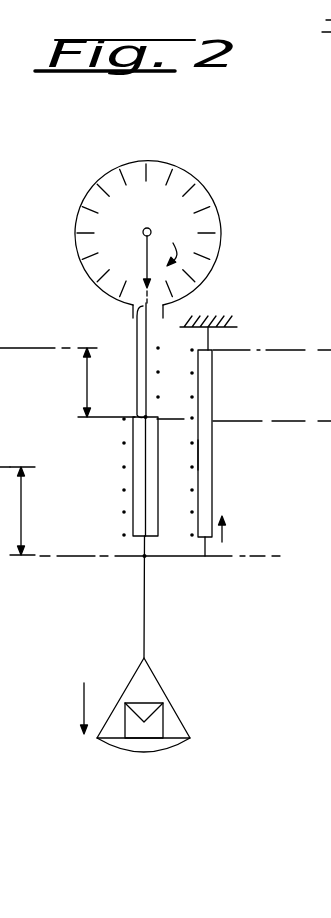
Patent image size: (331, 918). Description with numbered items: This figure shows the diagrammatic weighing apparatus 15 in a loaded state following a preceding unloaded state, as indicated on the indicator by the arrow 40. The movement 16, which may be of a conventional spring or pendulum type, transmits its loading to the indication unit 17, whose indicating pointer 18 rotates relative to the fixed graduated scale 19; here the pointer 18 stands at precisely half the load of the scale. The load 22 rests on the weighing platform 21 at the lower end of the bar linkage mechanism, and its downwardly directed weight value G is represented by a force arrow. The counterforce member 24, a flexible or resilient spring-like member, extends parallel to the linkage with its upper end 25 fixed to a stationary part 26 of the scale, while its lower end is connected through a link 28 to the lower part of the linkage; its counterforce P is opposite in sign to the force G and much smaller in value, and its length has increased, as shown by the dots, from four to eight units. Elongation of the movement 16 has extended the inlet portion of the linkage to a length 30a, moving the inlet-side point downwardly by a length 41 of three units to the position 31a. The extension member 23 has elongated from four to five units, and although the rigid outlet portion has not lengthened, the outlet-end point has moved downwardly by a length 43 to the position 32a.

The weighing apparatus 15 is at (204, 155).
The movement 16 is at (219, 204).
The indication unit 17 is at (189, 207).
The indicating pointer 18 is at (145, 256).
The graduated scale 19 is at (129, 177).
The arrow 40 is at (176, 242).
The stationary part 26 is at (212, 331).
The upper end 25 is at (212, 343).
The counterforce member 24 is at (213, 457).
The length 41 is at (85, 384).
The extended length of inlet portion 30a is at (137, 371).
The position 31a is at (146, 416).
The extension member 23 is at (127, 475).
The length 43 is at (22, 512).
The position 32a is at (143, 558).
The link 28 is at (175, 557).
The counterforce P is at (224, 538).
The weight value G is at (84, 697).
The load 22 is at (163, 718).
The weighing platform 21 is at (104, 742).